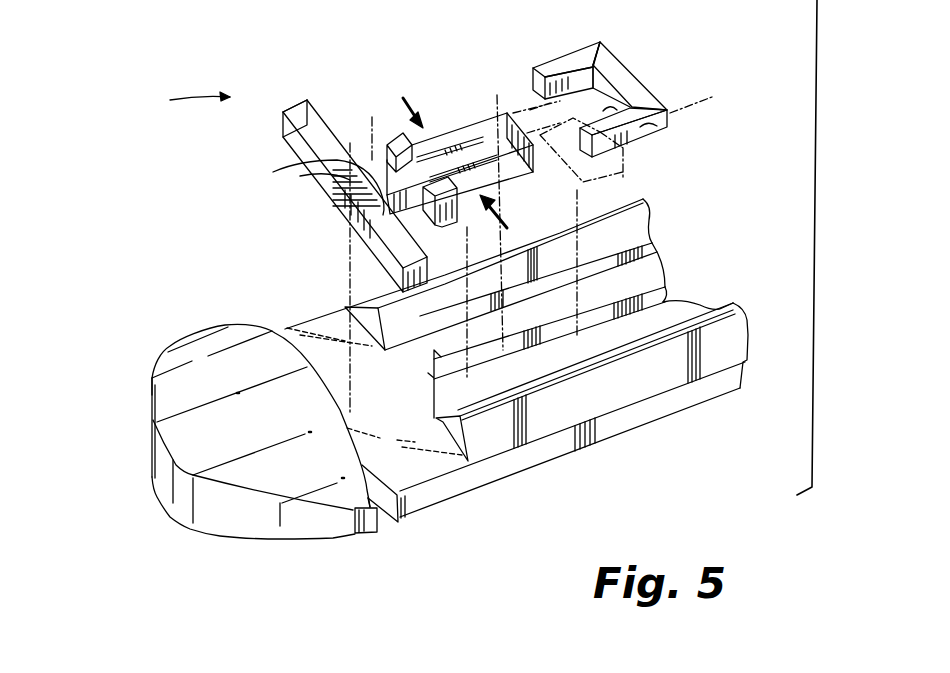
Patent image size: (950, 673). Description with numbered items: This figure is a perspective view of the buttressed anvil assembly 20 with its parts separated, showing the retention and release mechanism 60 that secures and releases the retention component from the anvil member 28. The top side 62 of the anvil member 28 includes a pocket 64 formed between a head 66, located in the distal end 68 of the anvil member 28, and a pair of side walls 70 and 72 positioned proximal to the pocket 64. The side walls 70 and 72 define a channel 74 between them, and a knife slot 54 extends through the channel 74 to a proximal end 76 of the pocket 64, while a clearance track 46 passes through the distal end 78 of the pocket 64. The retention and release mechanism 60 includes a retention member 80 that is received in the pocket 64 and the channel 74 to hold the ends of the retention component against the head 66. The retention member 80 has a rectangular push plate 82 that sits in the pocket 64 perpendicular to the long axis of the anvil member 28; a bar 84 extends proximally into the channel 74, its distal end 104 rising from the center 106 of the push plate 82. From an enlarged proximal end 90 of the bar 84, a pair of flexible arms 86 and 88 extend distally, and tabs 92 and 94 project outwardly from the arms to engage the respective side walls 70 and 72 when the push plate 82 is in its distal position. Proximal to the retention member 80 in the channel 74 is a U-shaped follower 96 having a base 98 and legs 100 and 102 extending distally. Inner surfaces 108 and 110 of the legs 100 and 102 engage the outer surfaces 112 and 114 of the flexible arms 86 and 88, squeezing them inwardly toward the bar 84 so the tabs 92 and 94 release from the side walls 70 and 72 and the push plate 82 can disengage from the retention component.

The buttressed anvil assembly 20 is at (844, 247).
The anvil member 28 is at (163, 477).
The clearance track 46 is at (383, 523).
The knife slot 54 is at (680, 287).
The retention and release mechanism 60 is at (175, 99).
The top side 62 is at (150, 287).
The pocket 64 is at (413, 463).
The head 66 is at (192, 400).
The distal end 68 is at (207, 535).
The side wall 70 is at (633, 380).
The side wall 72 is at (637, 213).
The channel 74 is at (663, 255).
The proximal end 76 is at (427, 387).
The distal end 78 is at (407, 496).
The retention member 80 is at (378, 93).
The push plate 82 is at (333, 190).
The bar 84 is at (357, 230).
The flexible arm 86 is at (505, 178).
The flexible arm 88 is at (448, 135).
The enlarged proximal end 90 is at (497, 95).
The tab 92 is at (432, 215).
The tab 94 is at (377, 150).
The follower 96 is at (670, 43).
The base 98 is at (647, 80).
The leg 100 is at (627, 137).
The leg 102 is at (565, 63).
The distal end 104 is at (300, 168).
The center 106 is at (340, 222).
The inner surface 108 is at (667, 115).
The inner surface 110 is at (603, 42).
The outer surface 112 is at (548, 192).
The outer surface 114 is at (427, 130).